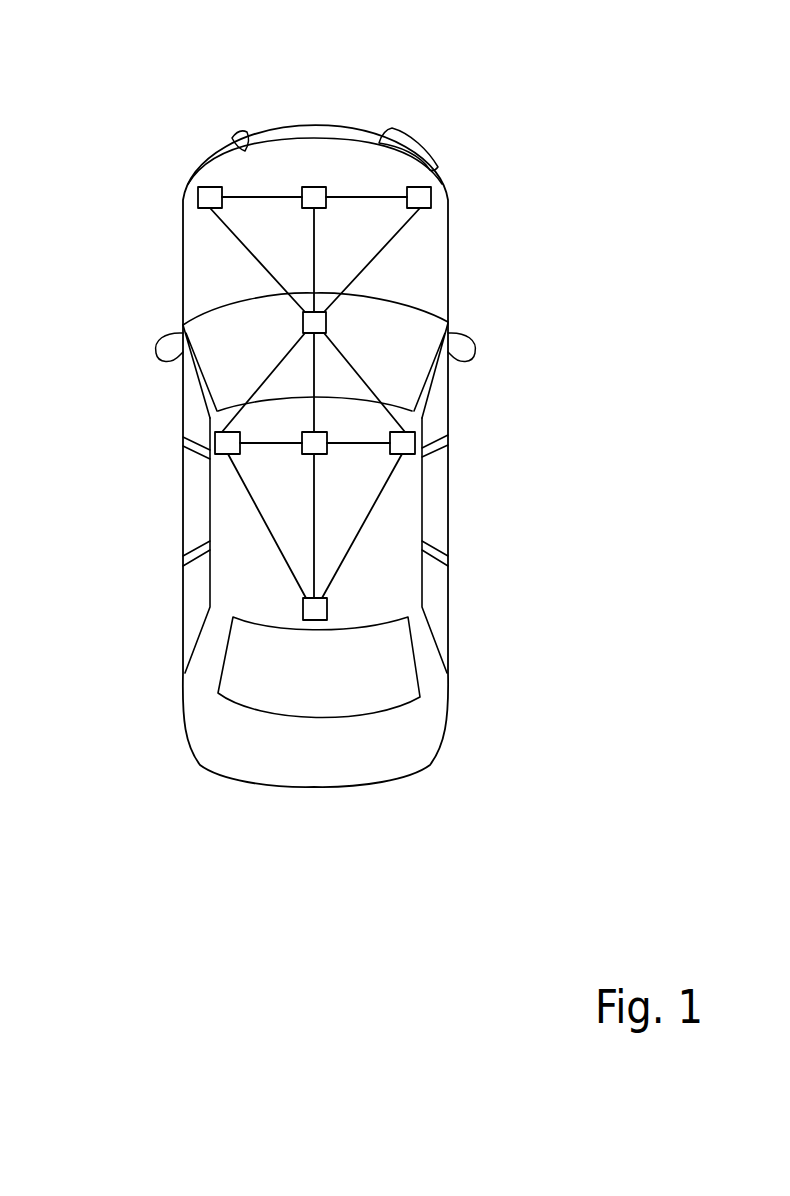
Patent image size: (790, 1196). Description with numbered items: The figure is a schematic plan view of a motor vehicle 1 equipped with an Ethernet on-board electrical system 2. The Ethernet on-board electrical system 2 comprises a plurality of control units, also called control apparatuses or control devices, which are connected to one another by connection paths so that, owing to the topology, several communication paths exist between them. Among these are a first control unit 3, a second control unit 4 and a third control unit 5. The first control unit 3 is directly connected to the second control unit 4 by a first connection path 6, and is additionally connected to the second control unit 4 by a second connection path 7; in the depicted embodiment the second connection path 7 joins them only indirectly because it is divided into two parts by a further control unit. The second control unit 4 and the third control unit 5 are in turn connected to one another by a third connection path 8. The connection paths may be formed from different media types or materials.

The motor vehicle 1 is at (450, 260).
The Ethernet on-board electrical system 2 is at (310, 318).
The first control unit 3 is at (205, 192).
The second control unit 4 is at (326, 327).
The third control unit 5 is at (227, 442).
The first connection path 6 is at (256, 260).
The second connection path 7 is at (312, 242).
The third connection path 8 is at (268, 380).